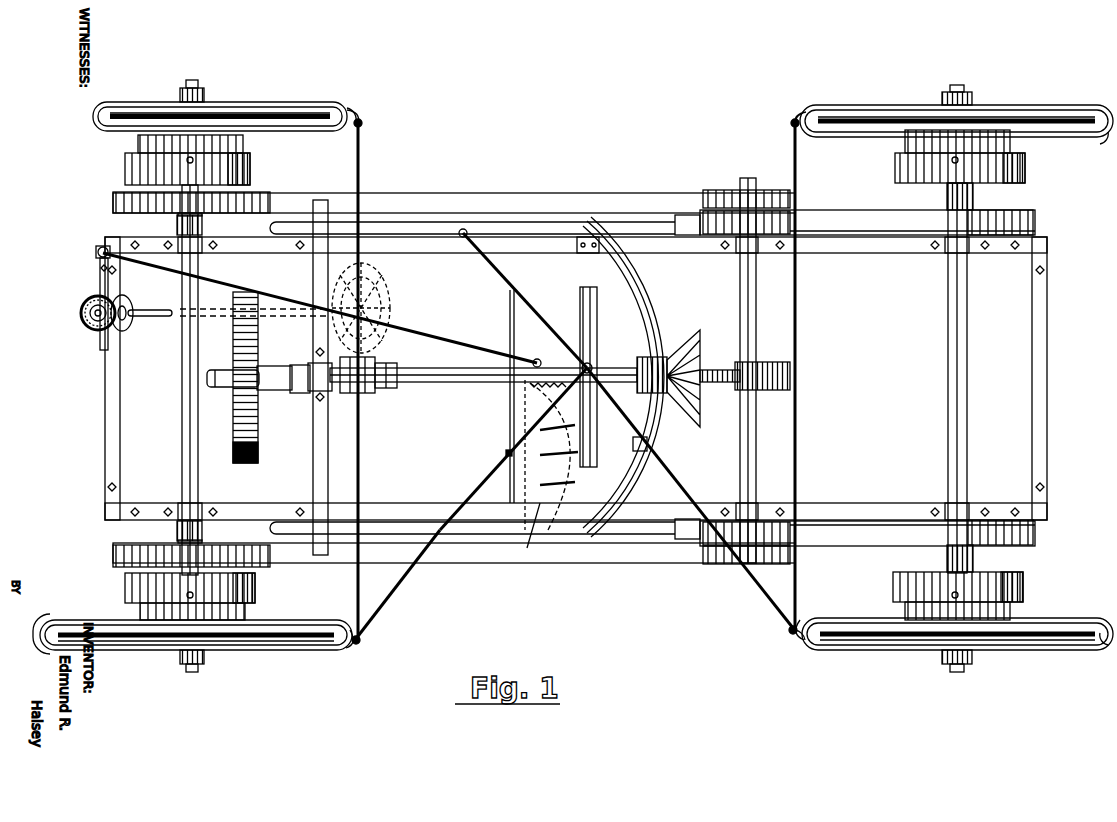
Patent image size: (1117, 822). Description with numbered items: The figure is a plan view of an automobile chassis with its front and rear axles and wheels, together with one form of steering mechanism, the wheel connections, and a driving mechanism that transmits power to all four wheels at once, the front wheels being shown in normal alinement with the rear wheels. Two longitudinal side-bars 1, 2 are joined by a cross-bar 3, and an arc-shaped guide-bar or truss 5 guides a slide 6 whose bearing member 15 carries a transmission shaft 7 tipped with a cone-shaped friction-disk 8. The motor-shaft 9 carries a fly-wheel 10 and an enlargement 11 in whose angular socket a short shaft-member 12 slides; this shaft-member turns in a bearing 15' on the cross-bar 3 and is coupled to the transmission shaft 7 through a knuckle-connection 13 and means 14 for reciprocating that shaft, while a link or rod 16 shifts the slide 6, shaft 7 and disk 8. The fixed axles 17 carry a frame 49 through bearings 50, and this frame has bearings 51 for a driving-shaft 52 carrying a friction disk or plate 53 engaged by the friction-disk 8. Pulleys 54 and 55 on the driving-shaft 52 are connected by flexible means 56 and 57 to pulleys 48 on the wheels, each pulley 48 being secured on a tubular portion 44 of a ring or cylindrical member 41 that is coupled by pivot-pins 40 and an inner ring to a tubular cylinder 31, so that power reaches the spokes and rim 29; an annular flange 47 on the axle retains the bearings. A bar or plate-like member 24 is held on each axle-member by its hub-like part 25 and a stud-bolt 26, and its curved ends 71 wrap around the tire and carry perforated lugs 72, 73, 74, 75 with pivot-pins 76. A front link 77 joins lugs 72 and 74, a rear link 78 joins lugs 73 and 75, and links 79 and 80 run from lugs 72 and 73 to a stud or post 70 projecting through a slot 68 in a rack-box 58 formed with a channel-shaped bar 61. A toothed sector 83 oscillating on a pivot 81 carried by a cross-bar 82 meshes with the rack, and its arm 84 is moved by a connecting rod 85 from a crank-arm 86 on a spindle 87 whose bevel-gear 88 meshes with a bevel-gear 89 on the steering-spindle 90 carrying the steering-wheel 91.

The side-bar 1 is at (425, 225).
The side-bar 2 is at (478, 540).
The cross-bar 3 is at (313, 272).
The arc-shaped guide-bar or truss 5 is at (648, 305).
The slide 6 is at (650, 443).
The transmission shaft 7 is at (440, 368).
The friction-disk 8 is at (690, 340).
The motor-shaft 9 is at (225, 388).
The fly-wheel 10 is at (235, 458).
The enlargement 11 is at (275, 390).
The shaft-member 12 is at (300, 393).
The knuckle-connection 13 is at (395, 388).
The means for producing longitudinal reciprocatory movements 14 is at (368, 395).
The bearing member 15 is at (636, 366).
The bearing 15' is at (305, 357).
The link or rod 16 is at (495, 270).
The axle 17 is at (182, 390).
The bar or plate-like member 24 is at (295, 95).
The hub-like part 25 is at (188, 88).
The stud-bolt 26 is at (198, 84).
The rim 29 is at (270, 128).
The tubular cylinder 31 is at (243, 145).
The pivot-pins 40 is at (188, 160).
The ring or cylindrical member 41 is at (265, 172).
The tubular portion 44 is at (202, 225).
The annular flange 47 is at (178, 222).
The pulley or grooved wheel 48 is at (115, 200).
The frame 49 is at (120, 438).
The bearings 50 is at (200, 252).
The bearings 51 is at (755, 253).
The driving-shaft 52 is at (748, 178).
The friction disk or plate 53 is at (745, 362).
The pulleys or wheels 54 is at (720, 190).
The pulleys or wheels 55 is at (718, 240).
The flexible means of power-transmission 56 is at (508, 200).
The flexible means of power-transmission 57 is at (838, 222).
The rack-box 58 is at (582, 253).
The channel-shaped bar 61 is at (578, 290).
The slot or opening 68 is at (580, 318).
The stud or post 70 is at (590, 363).
The curved end portions 71 is at (355, 108).
The perforated ear or lug 72 is at (362, 642).
The perforated ear or lug 73 is at (794, 635).
The perforated ear or lug 74 is at (360, 120).
The perforated ear or lug 75 is at (793, 125).
The pivot-pin or bolt 76 is at (360, 120).
The link or rod 77 is at (356, 156).
The link or rod 78 is at (798, 158).
The link or rod 79 is at (405, 575).
The link or rod 80 is at (680, 470).
The pivot or post 81 is at (506, 452).
The cross-bar 82 is at (508, 320).
The toothed sector 83 is at (527, 548).
The extension or arm 84 is at (530, 400).
The connecting rod or link 85 is at (432, 337).
The crank-arm 86 is at (100, 258).
The spindle or shaft 87 is at (80, 308).
The bevel-gear 88 is at (85, 325).
The bevel-gear 89 is at (130, 325).
The steering-spindle or rod 90 is at (155, 310).
The steering-wheel 91 is at (390, 290).